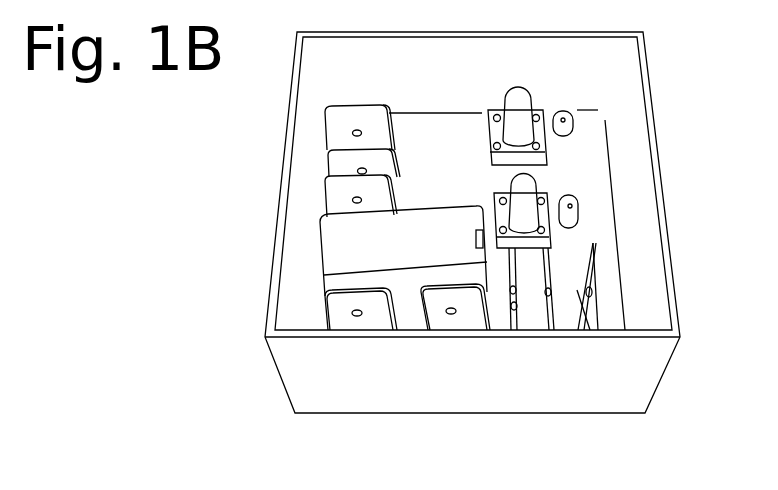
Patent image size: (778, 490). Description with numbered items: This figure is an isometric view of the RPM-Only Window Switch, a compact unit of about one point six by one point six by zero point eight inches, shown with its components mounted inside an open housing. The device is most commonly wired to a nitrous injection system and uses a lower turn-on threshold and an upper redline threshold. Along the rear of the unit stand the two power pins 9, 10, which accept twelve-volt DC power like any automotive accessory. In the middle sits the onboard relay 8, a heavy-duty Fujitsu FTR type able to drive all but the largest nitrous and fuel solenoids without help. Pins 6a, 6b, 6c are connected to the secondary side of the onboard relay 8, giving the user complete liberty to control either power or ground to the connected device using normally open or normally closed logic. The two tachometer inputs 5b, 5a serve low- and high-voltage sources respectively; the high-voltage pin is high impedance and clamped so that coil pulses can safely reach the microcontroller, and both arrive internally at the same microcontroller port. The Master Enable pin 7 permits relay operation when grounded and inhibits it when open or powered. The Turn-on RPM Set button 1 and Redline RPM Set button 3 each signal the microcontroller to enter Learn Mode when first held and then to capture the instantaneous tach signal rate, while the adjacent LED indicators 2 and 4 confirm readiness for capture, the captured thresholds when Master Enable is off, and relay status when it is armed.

The Turn-on RPM Set button 1 is at (521, 102).
The LED indicator 2 is at (568, 127).
The Redline RPM Set button 3 is at (524, 186).
The LED indicator 4 is at (577, 208).
The tachometer input 5a is at (595, 330).
The tachometer input 5b is at (553, 330).
The relay output pin 6a is at (440, 310).
The relay output pin 6b is at (355, 196).
The relay output pin 6c is at (348, 310).
The Master Enable pin 7 is at (513, 330).
The onboard relay 8 is at (345, 250).
The power pin 9 is at (355, 161).
The power pin 10 is at (355, 124).